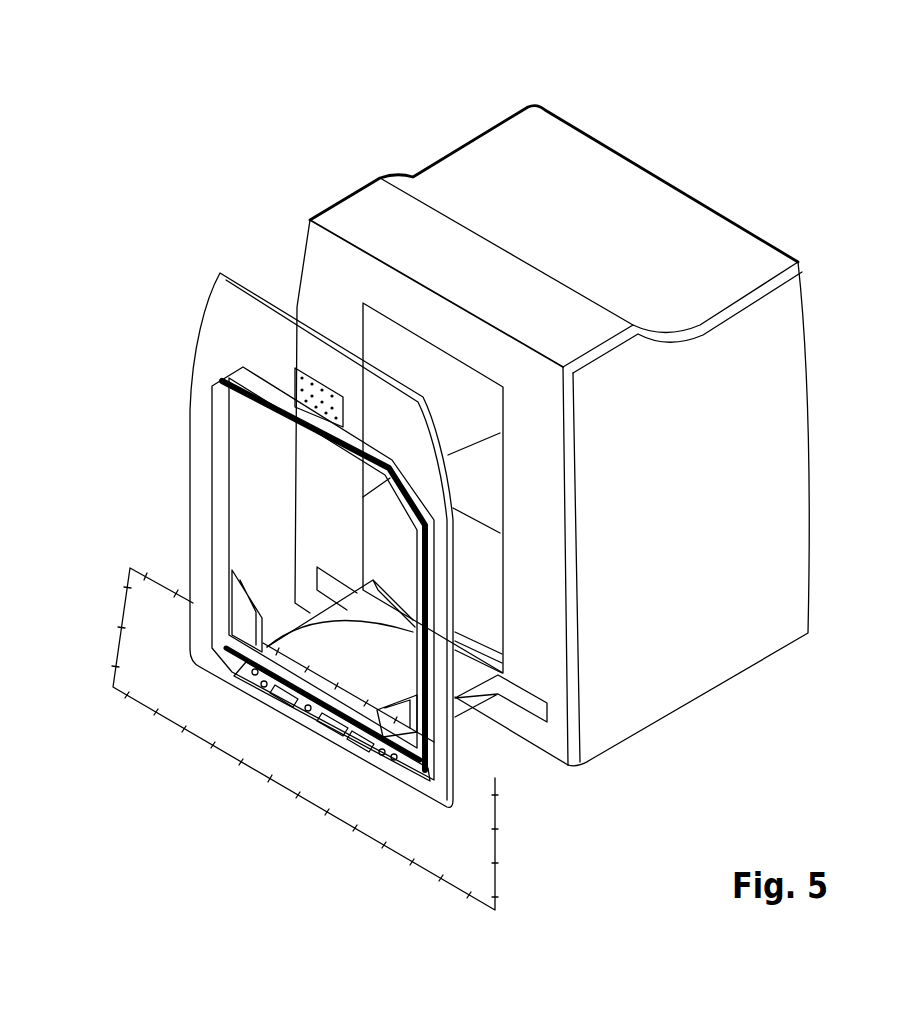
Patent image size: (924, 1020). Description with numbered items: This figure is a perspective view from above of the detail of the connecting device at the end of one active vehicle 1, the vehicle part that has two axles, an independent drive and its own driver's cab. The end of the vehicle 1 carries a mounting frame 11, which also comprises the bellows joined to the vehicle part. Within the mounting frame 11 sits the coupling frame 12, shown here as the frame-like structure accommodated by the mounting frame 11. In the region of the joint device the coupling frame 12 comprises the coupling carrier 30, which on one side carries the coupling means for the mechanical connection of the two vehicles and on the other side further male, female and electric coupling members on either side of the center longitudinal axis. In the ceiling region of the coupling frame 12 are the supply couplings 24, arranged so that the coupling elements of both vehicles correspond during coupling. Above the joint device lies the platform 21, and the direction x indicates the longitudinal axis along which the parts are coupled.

The active vehicle 1 is at (778, 349).
The mounting frame 11 is at (233, 340).
The coupling frame 12 is at (210, 458).
The supply couplings 24 is at (313, 367).
The platform 21 is at (378, 666).
The coupling carrier 30 is at (363, 762).
The axis direction x is at (197, 737).